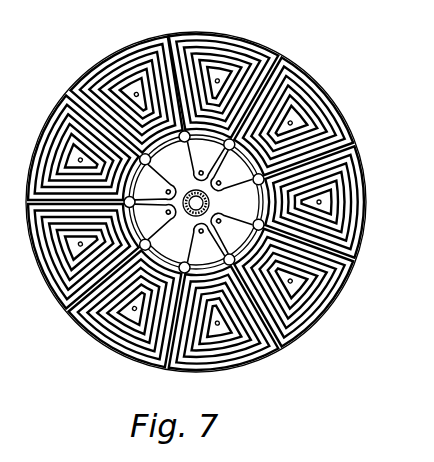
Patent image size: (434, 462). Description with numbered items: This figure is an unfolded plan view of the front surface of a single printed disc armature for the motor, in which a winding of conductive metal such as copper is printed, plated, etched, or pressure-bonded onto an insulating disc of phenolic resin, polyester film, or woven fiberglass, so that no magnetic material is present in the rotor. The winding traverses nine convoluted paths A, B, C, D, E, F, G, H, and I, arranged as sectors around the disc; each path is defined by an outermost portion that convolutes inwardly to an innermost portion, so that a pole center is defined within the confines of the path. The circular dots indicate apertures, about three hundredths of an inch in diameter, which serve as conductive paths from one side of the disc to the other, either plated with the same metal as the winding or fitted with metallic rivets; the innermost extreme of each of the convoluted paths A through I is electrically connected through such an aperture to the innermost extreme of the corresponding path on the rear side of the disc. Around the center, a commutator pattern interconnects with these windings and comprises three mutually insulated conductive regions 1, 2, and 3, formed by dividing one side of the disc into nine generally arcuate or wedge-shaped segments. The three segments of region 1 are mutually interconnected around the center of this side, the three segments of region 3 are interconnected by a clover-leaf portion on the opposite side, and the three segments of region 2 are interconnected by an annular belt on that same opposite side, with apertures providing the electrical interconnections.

The convoluted path A is at (114, 50).
The convoluted path B is at (233, 38).
The convoluted path C is at (322, 87).
The convoluted path D is at (367, 217).
The convoluted path E is at (333, 313).
The convoluted path F is at (229, 375).
The convoluted path G is at (111, 353).
The convoluted path H is at (34, 264).
The convoluted path I is at (37, 129).
The conductive region 1 is at (207, 202).
The conductive region 2 is at (194, 198).
The conductive region 3 is at (194, 206).